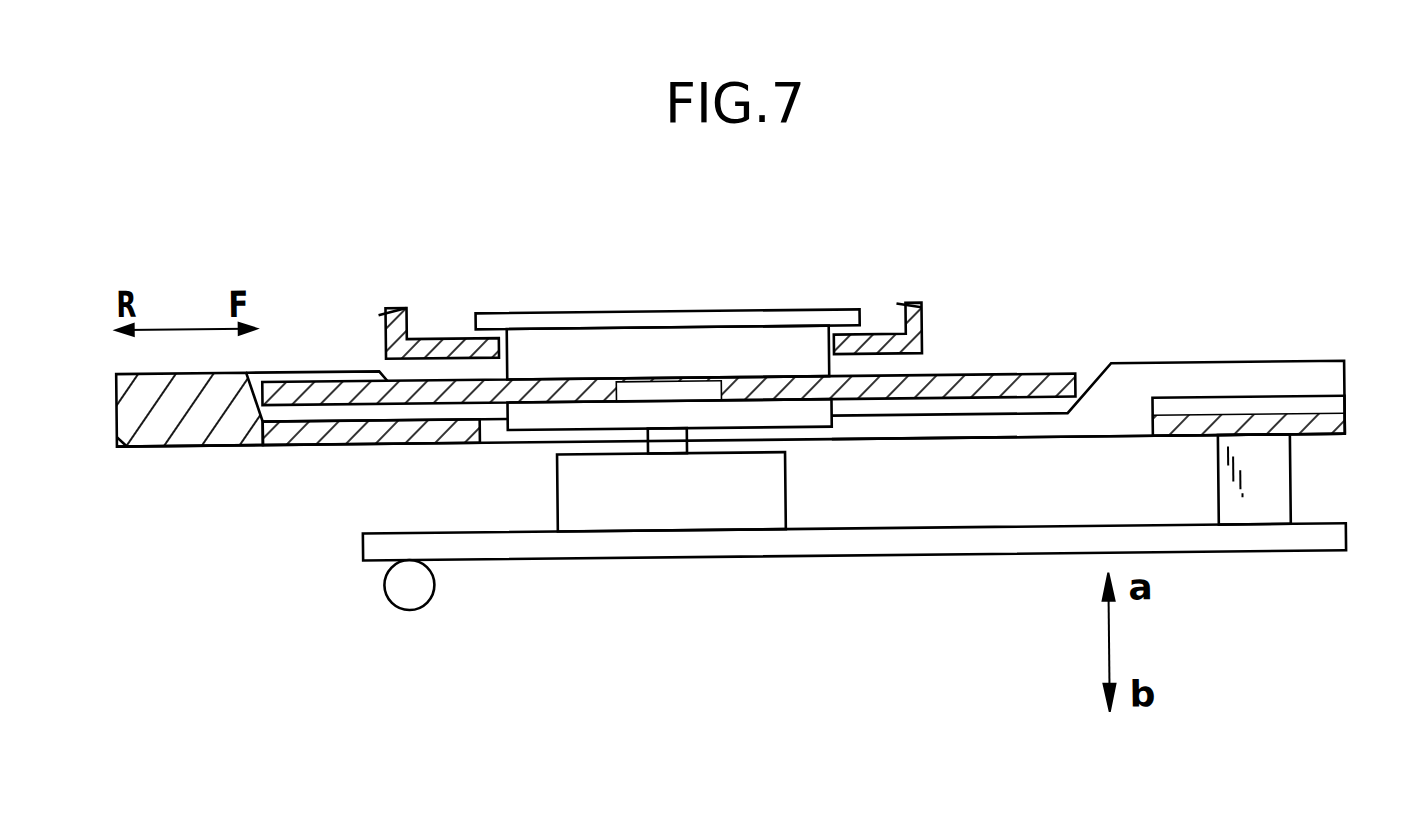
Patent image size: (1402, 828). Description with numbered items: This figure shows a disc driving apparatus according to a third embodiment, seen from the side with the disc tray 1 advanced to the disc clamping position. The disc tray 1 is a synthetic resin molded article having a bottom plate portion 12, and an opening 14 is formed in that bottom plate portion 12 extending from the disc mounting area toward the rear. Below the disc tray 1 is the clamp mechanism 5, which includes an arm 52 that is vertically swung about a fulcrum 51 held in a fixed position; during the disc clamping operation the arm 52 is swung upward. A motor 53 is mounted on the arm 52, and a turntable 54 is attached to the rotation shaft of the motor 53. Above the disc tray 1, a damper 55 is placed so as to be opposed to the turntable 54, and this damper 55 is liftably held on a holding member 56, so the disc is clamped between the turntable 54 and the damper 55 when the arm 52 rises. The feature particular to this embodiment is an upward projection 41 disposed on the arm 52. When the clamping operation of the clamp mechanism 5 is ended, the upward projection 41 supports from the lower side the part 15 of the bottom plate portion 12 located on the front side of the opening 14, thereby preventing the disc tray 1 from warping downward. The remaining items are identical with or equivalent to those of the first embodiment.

The disc tray 1 is at (197, 442).
The bottom plate portion 12 is at (345, 443).
The opening 14 is at (977, 443).
The part of the bottom plate portion 15 is at (1198, 427).
The upward projection 41 is at (1292, 484).
The clamp mechanism 5 is at (870, 560).
The fulcrum 51 is at (397, 604).
The arm 52 is at (893, 559).
The motor 53 is at (787, 488).
The turntable 54 is at (527, 441).
The damper 55 is at (768, 339).
The holding member 56 is at (925, 314).